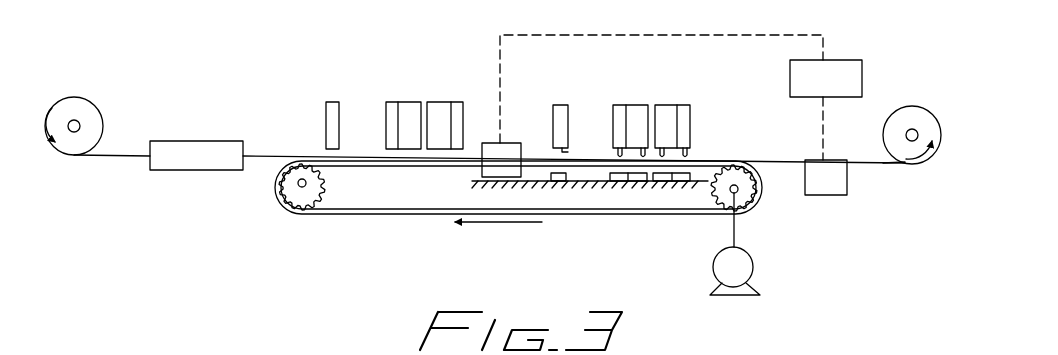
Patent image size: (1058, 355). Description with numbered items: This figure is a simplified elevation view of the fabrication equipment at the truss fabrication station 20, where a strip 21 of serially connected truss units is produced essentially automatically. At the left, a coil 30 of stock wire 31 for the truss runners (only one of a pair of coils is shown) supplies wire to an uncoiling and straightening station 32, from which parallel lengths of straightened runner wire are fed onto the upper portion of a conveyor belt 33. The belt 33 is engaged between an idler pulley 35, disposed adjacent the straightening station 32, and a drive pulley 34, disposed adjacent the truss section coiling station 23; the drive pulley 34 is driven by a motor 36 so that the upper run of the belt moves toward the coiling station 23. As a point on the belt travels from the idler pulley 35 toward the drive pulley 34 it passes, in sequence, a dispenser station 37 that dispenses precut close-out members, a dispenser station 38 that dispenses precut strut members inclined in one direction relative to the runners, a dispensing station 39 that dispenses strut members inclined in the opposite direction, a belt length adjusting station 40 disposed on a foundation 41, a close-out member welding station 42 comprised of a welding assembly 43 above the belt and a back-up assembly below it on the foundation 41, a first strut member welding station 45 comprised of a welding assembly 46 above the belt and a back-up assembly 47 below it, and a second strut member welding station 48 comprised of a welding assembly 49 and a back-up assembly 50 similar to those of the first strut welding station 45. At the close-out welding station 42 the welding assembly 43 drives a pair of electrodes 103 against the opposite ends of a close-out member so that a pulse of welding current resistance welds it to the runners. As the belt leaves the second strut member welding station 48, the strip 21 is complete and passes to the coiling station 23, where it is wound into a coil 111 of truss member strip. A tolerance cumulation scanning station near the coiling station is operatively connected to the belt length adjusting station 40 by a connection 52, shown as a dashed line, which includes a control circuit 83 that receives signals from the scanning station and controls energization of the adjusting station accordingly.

The truss fabrication station 20 is at (378, 93).
The strip of truss sections 21 is at (752, 160).
The truss section coiling station 23 is at (913, 95).
The coil of stock wire 30 is at (88, 100).
The stock wire 31 is at (121, 160).
The uncoiling and straightening station 32 is at (213, 165).
The conveyor belt 33 is at (381, 214).
The drive pulley 34 is at (752, 200).
The idler pulley 35 is at (302, 200).
The motor 36 is at (752, 268).
The dispenser station 37 is at (326, 122).
The dispenser station 38 is at (406, 104).
The dispensing station 39 is at (436, 105).
The belt length adjusting station 40 is at (487, 146).
The foundation 41 is at (589, 174).
The close-out member welding station 42 is at (558, 80).
The welding assembly 43 is at (558, 108).
The first strut member welding station 45 is at (640, 78).
The welding assembly 46 is at (637, 106).
The back-up assembly 47 is at (636, 175).
The second strut member welding station 48 is at (694, 83).
The welding assembly 49 is at (688, 118).
The back-up assembly 50 is at (667, 175).
The connection 52 is at (784, 36).
The control circuit 83 is at (834, 60).
The electrodes 103 is at (559, 151).
The coil of truss member strip 111 is at (906, 107).